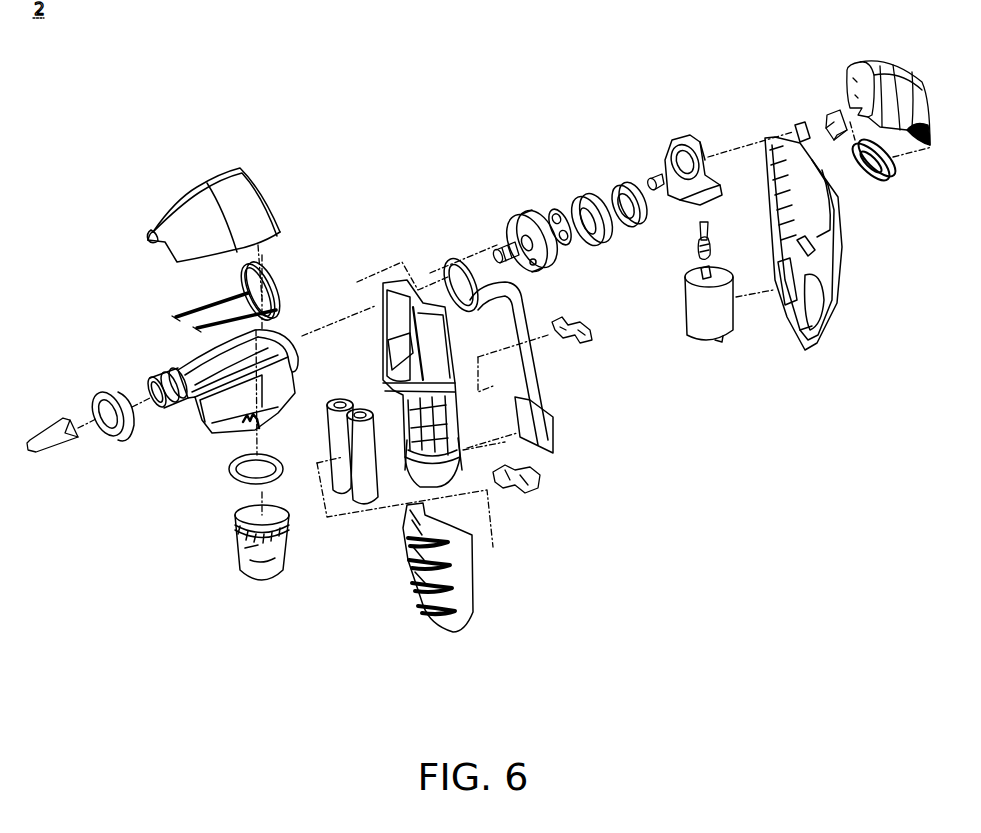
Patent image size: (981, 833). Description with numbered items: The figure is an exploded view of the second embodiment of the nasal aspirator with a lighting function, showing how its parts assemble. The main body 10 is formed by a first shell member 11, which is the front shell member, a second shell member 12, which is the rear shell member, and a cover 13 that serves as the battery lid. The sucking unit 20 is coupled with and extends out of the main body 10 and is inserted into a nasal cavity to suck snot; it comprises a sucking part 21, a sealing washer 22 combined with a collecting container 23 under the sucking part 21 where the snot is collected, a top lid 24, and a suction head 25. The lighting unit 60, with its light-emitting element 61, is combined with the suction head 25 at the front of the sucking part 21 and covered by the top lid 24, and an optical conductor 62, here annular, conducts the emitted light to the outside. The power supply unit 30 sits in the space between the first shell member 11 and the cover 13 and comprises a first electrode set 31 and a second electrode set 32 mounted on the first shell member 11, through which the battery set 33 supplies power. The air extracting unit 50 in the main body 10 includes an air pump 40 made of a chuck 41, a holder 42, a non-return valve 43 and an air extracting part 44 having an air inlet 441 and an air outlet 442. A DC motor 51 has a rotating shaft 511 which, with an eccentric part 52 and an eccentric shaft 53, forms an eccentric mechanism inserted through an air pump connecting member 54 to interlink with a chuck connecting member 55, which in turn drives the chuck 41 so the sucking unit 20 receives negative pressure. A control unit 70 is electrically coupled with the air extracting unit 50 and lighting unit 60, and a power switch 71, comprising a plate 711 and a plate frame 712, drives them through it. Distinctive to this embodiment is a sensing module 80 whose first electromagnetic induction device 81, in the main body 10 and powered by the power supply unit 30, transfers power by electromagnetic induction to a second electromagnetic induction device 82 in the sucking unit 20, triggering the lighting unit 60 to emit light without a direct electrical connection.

The main body 10 is at (220, 77).
The first shell member 11 is at (395, 320).
The second shell member 12 is at (833, 320).
The cover 13 is at (415, 597).
The sucking unit 20 is at (112, 166).
The sucking part 21 is at (207, 427).
The sealing washer 22 is at (233, 478).
The collecting container 23 is at (233, 565).
The top lid 24 is at (202, 185).
The suction head 25 is at (42, 452).
The power supply unit 30 is at (512, 578).
The first electrode set 31 is at (582, 328).
The second electrode set 32 is at (527, 493).
The battery set 33 is at (347, 497).
The air pump 40 is at (468, 90).
The chuck 41 is at (610, 183).
The holder 42 is at (585, 192).
The non-return valve 43 is at (545, 207).
The air extracting part 44 is at (527, 210).
The air inlet 441 is at (498, 250).
The air outlet 442 is at (537, 272).
The air extracting unit 50 is at (690, 425).
The DC motor 51 is at (688, 330).
The rotating shaft 511 is at (697, 270).
The eccentric part 52 is at (698, 242).
The eccentric shaft 53 is at (698, 227).
The air pump connecting member 54 is at (678, 135).
The chuck connecting member 55 is at (652, 178).
The lighting unit 60 is at (103, 296).
The light-emitting element 61 is at (196, 329).
The optical conductor 62 is at (100, 408).
The control unit 70 is at (708, 65).
The power switch 71 is at (877, 182).
The plate 711 is at (828, 118).
The plate frame 712 is at (797, 125).
The sensing module 80 is at (310, 185).
The first electromagnetic induction device 81 is at (448, 257).
The second electromagnetic induction device 82 is at (267, 283).